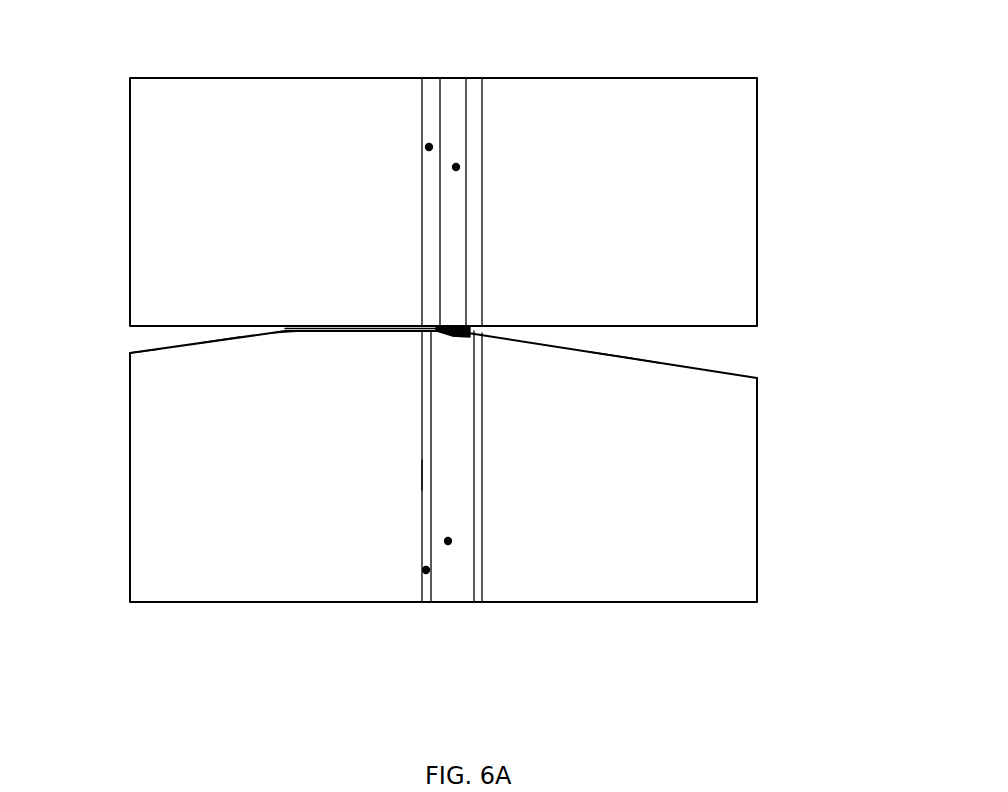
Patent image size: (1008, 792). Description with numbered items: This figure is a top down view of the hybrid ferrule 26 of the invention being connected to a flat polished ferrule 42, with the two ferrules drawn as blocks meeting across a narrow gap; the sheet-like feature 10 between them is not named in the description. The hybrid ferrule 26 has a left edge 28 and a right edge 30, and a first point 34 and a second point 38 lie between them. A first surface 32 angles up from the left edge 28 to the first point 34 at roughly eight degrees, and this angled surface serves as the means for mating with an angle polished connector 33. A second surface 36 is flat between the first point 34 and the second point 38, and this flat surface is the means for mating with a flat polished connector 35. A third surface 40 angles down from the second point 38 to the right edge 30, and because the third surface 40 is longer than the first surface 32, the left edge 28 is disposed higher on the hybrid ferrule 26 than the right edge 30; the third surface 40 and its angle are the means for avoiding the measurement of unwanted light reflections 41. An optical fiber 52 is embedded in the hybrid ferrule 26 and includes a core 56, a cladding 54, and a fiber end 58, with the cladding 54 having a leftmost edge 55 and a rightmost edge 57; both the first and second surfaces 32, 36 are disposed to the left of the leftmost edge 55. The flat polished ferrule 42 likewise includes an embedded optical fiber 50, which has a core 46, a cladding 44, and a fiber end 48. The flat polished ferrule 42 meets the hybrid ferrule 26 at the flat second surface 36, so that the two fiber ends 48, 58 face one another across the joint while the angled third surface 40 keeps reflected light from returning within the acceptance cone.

The sheet / film 10 is at (468, 331).
The hybrid ferrule 26 is at (213, 582).
The left edge 28 is at (130, 353).
The right edge 30 is at (757, 378).
The first surface 32 is at (217, 343).
The angle polished connector 33 is at (160, 336).
The first point 34 is at (287, 333).
The flat polished connector 35 is at (327, 350).
The second surface 36 is at (360, 333).
The second point 38 is at (430, 333).
The third surface 40 is at (608, 360).
The unwanted light reflections 41 is at (640, 373).
The flat polished ferrule 42 is at (603, 148).
The cladding 44 is at (428, 147).
The core 46 is at (457, 167).
The fiber end 48 is at (470, 328).
The optical fiber 50 is at (420, 217).
The optical fiber 52 is at (420, 532).
The cladding 54 is at (420, 577).
The leftmost edge 55 is at (420, 475).
The core 56 is at (448, 541).
The rightmost edge 57 is at (483, 507).
The fiber end 58 is at (455, 335).